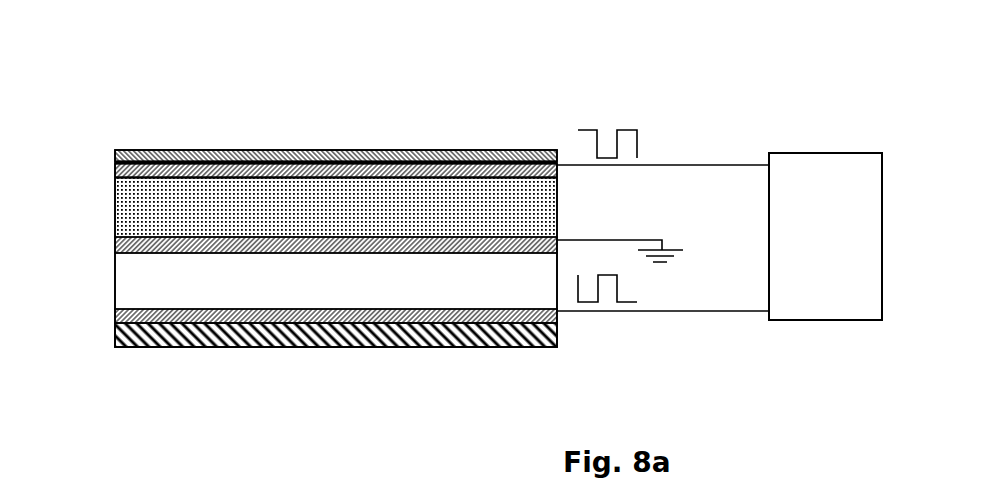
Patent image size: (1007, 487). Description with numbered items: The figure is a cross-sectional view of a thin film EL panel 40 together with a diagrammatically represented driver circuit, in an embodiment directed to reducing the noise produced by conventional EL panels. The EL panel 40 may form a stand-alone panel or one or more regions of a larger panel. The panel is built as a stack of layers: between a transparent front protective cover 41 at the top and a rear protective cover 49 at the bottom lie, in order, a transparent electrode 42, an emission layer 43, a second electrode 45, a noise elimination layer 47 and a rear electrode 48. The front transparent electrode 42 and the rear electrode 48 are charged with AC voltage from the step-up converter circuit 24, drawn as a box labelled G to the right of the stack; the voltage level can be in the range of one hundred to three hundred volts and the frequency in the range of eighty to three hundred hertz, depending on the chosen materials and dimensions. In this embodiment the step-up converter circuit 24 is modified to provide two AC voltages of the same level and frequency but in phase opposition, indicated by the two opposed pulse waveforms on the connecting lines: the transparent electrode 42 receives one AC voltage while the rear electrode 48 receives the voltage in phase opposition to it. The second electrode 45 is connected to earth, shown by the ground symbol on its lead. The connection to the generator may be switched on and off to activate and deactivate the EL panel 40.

The thin film EL panel 40 is at (230, 108).
The transparent front protective cover 41 is at (127, 153).
The transparent electrode 42 is at (127, 172).
The emission layer 43 is at (127, 207).
The second electrode 45 is at (115, 247).
The noise elimination layer 47 is at (128, 286).
The rear electrode 48 is at (115, 323).
The rear protective cover 49 is at (122, 346).
The step-up converter circuit 24 is at (836, 305).